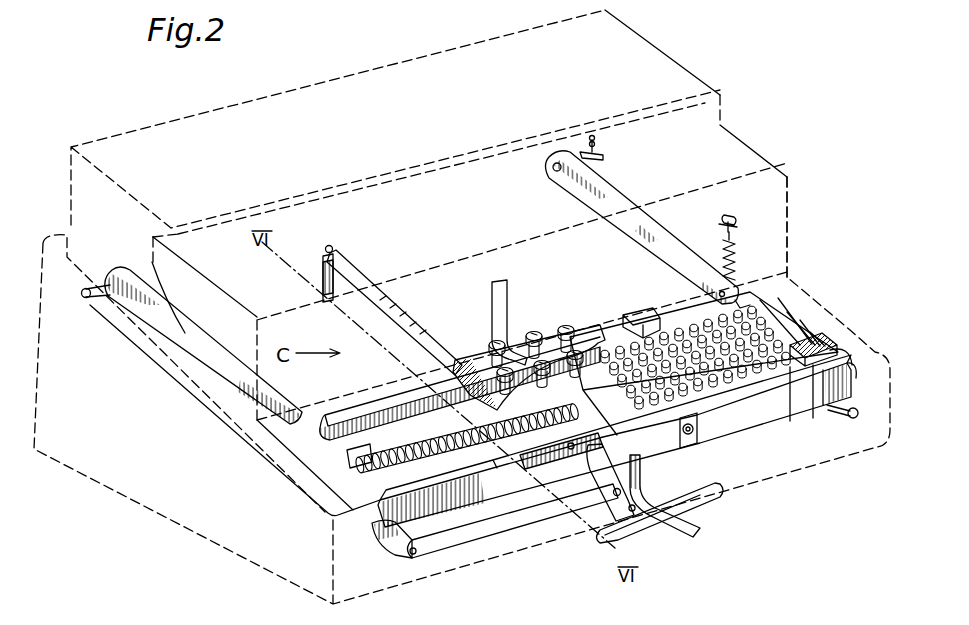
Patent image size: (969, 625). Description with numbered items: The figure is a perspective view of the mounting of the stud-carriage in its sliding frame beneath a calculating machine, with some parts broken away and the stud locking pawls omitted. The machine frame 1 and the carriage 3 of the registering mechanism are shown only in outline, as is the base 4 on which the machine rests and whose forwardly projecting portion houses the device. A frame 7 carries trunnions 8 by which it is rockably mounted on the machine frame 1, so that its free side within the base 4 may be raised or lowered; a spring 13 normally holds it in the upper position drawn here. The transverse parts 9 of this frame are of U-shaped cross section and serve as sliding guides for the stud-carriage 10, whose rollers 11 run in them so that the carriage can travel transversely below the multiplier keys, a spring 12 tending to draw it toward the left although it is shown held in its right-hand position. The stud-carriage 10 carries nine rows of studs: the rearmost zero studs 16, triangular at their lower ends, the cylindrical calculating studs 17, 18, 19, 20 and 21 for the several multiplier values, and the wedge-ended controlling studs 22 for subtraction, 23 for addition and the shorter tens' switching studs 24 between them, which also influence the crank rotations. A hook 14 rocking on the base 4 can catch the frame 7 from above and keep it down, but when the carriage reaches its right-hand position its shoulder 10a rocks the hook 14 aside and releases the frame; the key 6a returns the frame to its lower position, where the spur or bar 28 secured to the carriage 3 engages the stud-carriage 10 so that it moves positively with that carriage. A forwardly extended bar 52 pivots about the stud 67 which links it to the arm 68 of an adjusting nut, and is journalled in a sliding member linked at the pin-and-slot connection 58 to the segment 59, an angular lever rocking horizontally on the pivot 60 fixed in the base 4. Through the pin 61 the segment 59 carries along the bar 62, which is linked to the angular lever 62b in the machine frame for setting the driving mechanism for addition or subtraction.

The machine frame 1 is at (660, 58).
The carriage 3 is at (787, 203).
The base 4 is at (773, 472).
The key 6a is at (638, 310).
The frame 7 is at (187, 343).
The trunnions 8 is at (95, 288).
The transverse parts of the frame 9 is at (388, 403).
The stud-carriage 10 is at (658, 408).
The projection or shoulder 10a is at (854, 360).
The rollers 11 is at (688, 447).
The spring 12 is at (463, 442).
The spring 13 is at (735, 253).
The hook 14 is at (848, 363).
The zero studs 16 is at (740, 303).
The studs 17 is at (775, 313).
The studs 18 is at (791, 312).
The studs 19 is at (797, 321).
The studs 20 is at (805, 326).
The studs 21 is at (813, 332).
The controlling studs 22 is at (817, 342).
The controlling studs 23 is at (813, 401).
The tens' switching studs 24 is at (792, 404).
The spur or bar 28 is at (510, 305).
The bar 52 is at (400, 312).
The pin-and-slot connection 58 is at (630, 505).
The segment 59 is at (585, 471).
The pivot 60 is at (567, 446).
The pin 61 is at (612, 483).
The bar 62 is at (498, 536).
The angular lever 62b is at (385, 546).
The stud 67 is at (333, 255).
The arm 68 is at (320, 273).